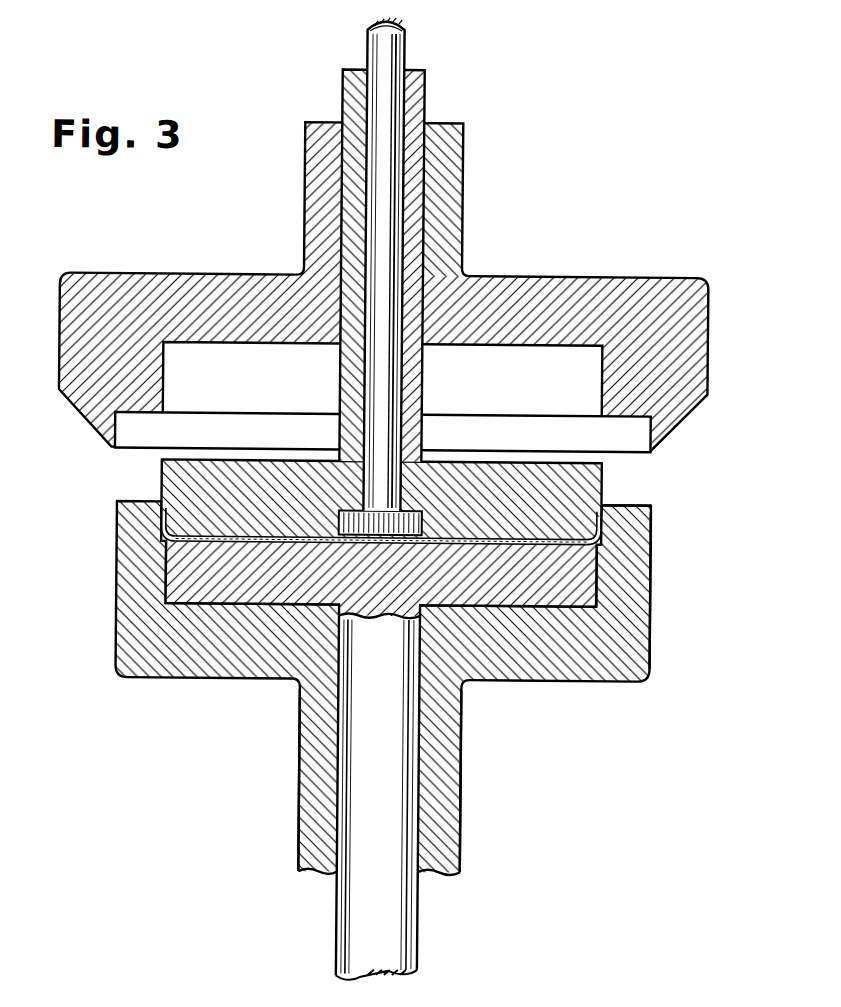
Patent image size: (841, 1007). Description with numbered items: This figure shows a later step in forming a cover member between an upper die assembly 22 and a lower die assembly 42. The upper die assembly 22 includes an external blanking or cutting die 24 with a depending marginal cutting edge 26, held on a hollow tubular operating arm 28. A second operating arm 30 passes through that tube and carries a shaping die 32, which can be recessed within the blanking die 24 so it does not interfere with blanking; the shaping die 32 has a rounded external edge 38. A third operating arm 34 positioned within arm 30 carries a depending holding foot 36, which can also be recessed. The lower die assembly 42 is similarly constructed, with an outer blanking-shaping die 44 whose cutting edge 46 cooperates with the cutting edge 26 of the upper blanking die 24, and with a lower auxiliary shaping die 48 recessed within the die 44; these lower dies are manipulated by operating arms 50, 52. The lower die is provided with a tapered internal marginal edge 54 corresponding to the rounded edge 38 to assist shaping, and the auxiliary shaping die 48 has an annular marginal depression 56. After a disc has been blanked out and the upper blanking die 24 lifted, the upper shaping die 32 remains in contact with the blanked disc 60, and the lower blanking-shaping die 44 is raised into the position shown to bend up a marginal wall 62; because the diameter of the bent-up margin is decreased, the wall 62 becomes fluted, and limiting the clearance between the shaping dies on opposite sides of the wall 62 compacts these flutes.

The upper die assembly 22 is at (467, 267).
The external blanking or cutting die 24 is at (163, 284).
The depending marginal cutting edge 26 is at (114, 436).
The operating arm 28 is at (311, 186).
The second operating arm 30 is at (353, 88).
The shaping die 32 is at (172, 473).
The third operating arm 34 is at (404, 47).
The depending holding foot 36 is at (422, 521).
The rounded external edge 38 is at (163, 537).
The lower die assembly 42 is at (291, 687).
The outer blanking-shaping die 44 is at (634, 545).
The cutting edge 46 is at (653, 514).
The lower auxiliary shaping die 48 is at (191, 577).
The operating arm 50 is at (453, 805).
The operating arm 52 is at (356, 920).
The tapered internal marginal edge 54 is at (167, 532).
The annular marginal depression 56 is at (600, 558).
The blanked disc 60 is at (548, 529).
The marginal wall 62 is at (160, 509).